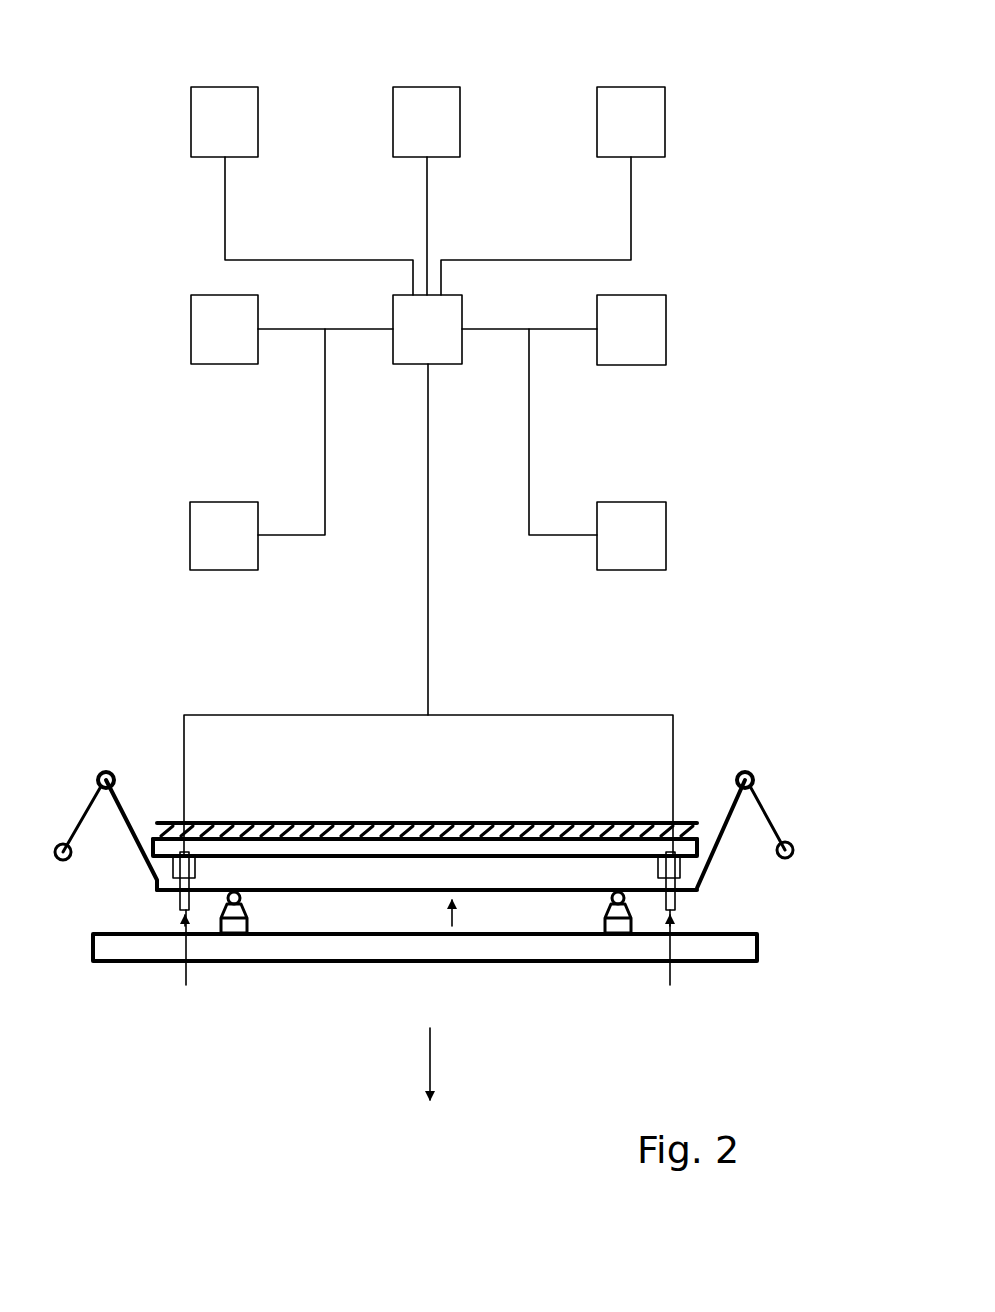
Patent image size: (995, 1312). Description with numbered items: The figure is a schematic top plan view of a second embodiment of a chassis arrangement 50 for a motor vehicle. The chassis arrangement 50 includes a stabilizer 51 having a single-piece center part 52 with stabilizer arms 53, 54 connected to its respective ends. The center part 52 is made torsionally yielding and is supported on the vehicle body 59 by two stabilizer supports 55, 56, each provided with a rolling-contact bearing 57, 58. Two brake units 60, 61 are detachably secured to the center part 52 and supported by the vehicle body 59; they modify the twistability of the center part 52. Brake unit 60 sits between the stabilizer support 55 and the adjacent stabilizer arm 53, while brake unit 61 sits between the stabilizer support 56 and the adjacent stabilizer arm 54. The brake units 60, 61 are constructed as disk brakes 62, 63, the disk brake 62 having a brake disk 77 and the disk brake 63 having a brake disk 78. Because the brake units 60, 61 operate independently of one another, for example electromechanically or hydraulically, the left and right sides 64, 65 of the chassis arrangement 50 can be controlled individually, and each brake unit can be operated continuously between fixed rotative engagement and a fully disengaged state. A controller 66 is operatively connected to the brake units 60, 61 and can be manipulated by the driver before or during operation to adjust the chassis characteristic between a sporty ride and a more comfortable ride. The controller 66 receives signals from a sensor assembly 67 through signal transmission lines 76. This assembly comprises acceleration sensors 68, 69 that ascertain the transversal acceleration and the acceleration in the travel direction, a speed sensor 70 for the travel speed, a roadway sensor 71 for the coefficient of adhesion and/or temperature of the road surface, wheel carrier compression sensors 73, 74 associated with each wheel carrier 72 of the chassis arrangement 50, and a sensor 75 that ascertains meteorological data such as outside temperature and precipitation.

The chassis arrangement 50 is at (293, 1092).
The stabilizer 51 is at (450, 935).
The center part 52 is at (385, 892).
The stabilizer arm 53 is at (147, 862).
The stabilizer arm 54 is at (713, 857).
The stabilizer support 55 is at (239, 934).
The stabilizer support 56 is at (622, 934).
The rolling-contact bearing 57 is at (243, 898).
The rolling-contact bearing 58 is at (608, 898).
The vehicle body 59 is at (398, 822).
The brake unit 60 is at (158, 877).
The brake unit 61 is at (690, 870).
The disk brake 62 is at (185, 959).
The disk brake 63 is at (671, 959).
The left side 64 is at (758, 791).
The right side 65 is at (96, 792).
The controller 66 is at (415, 343).
The sensor assembly 67 is at (188, 246).
The acceleration sensor 68 is at (212, 550).
The acceleration sensor 69 is at (212, 343).
The speed sensor 70 is at (212, 135).
The roadway sensor 71 is at (415, 135).
The wheel carrier 72 is at (84, 818).
The wheel carrier compression sensor 73 is at (619, 550).
The wheel carrier compression sensor 74 is at (619, 343).
The sensor for meteorological data 75 is at (618, 135).
The signal transmission line 76 is at (303, 260).
The brake disk 77 is at (180, 896).
The brake disk 78 is at (676, 896).